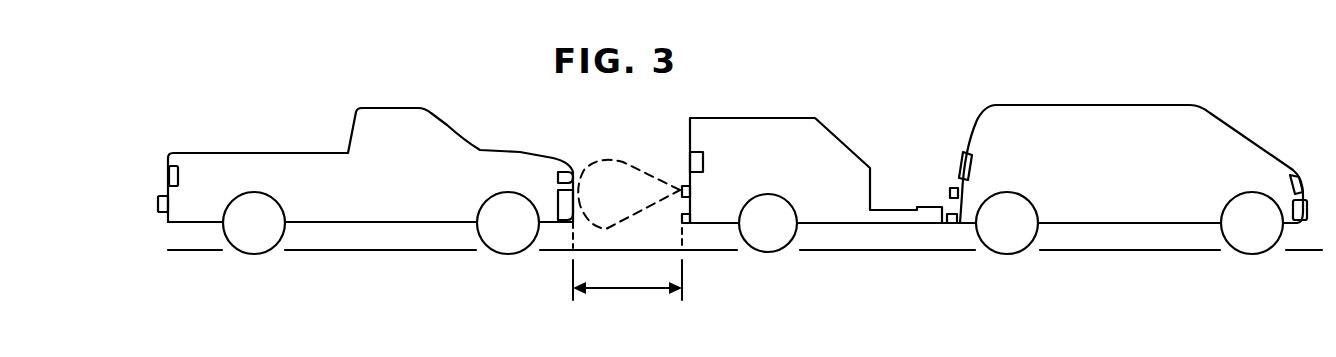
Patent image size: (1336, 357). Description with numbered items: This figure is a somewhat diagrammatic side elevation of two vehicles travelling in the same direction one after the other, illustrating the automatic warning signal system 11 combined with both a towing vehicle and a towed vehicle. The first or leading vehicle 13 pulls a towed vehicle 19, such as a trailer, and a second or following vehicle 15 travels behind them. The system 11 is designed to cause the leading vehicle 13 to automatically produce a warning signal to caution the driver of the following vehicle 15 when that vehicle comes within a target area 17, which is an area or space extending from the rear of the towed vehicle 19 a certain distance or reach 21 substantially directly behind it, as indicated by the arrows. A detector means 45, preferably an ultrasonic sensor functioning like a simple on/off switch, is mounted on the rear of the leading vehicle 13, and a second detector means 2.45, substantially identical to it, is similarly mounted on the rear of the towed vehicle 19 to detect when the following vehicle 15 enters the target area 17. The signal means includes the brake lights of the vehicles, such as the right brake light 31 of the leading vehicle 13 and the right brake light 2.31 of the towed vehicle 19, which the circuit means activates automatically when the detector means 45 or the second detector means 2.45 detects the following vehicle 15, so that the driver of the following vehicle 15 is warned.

The automatic warning signal system 11 is at (532, 109).
The leading vehicle 13 is at (1082, 118).
The following vehicle 15 is at (387, 121).
The target area 17 is at (618, 160).
The towed vehicle 19 is at (735, 125).
The reach 21 is at (625, 290).
The right brake light 31 is at (962, 160).
The detector means 45 is at (952, 192).
The right brake light of the towed vehicle 2.31 is at (691, 150).
The second detector means 2.45 is at (684, 181).